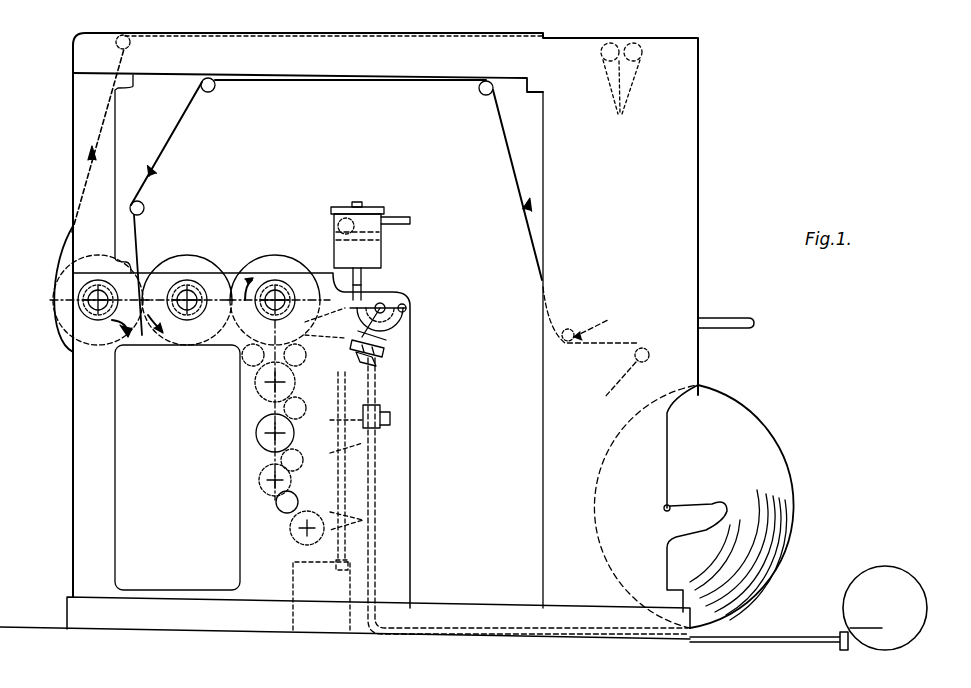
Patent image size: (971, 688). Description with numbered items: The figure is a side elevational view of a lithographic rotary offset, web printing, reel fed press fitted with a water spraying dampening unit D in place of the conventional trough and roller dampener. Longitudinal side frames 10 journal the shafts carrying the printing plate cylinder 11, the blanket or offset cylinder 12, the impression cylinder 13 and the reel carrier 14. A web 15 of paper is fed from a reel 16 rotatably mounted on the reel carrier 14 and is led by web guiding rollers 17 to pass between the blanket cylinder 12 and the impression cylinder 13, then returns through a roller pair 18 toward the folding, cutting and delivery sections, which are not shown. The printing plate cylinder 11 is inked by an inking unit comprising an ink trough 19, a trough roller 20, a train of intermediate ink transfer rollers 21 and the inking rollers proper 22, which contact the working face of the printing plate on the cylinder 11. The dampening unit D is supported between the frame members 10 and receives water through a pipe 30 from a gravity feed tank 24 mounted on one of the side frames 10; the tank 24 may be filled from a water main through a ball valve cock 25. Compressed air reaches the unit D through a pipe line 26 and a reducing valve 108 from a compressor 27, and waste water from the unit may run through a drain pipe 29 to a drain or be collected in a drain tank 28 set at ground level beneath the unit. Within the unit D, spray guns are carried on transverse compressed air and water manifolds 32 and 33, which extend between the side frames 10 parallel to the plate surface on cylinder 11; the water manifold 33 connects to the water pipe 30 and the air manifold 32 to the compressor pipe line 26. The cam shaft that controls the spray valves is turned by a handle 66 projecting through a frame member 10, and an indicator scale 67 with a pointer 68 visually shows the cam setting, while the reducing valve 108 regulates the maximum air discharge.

The side frame 10 is at (677, 177).
The printing plate cylinder 11 is at (262, 262).
The blanket cylinder 12 is at (185, 260).
The impression cylinder 13 is at (55, 312).
The reel carrier 14 is at (664, 510).
The web 15 is at (527, 207).
The reel 16 is at (772, 452).
The web guiding rollers 17 is at (129, 44).
The roller pair 18 is at (621, 90).
The ink trough 19 is at (326, 511).
The trough roller 20 is at (296, 534).
The intermediate ink transfer rollers 21 is at (262, 473).
The inking rollers 22 is at (248, 357).
The gravity feed tank 24 is at (385, 252).
The ball valve cock 25 is at (343, 208).
The pipe line 26 is at (375, 472).
The compressor 27 is at (888, 586).
The drain tank 28 is at (303, 578).
The drain pipe 29 is at (375, 442).
The pipe 30 is at (362, 280).
The air manifold 32 is at (303, 358).
The water manifold 33 is at (368, 358).
The handle 66 is at (375, 306).
The indicator scale 67 is at (403, 323).
The pointer 68 is at (405, 308).
The reducing valve 108 is at (306, 448).
The dampening unit D is at (392, 352).